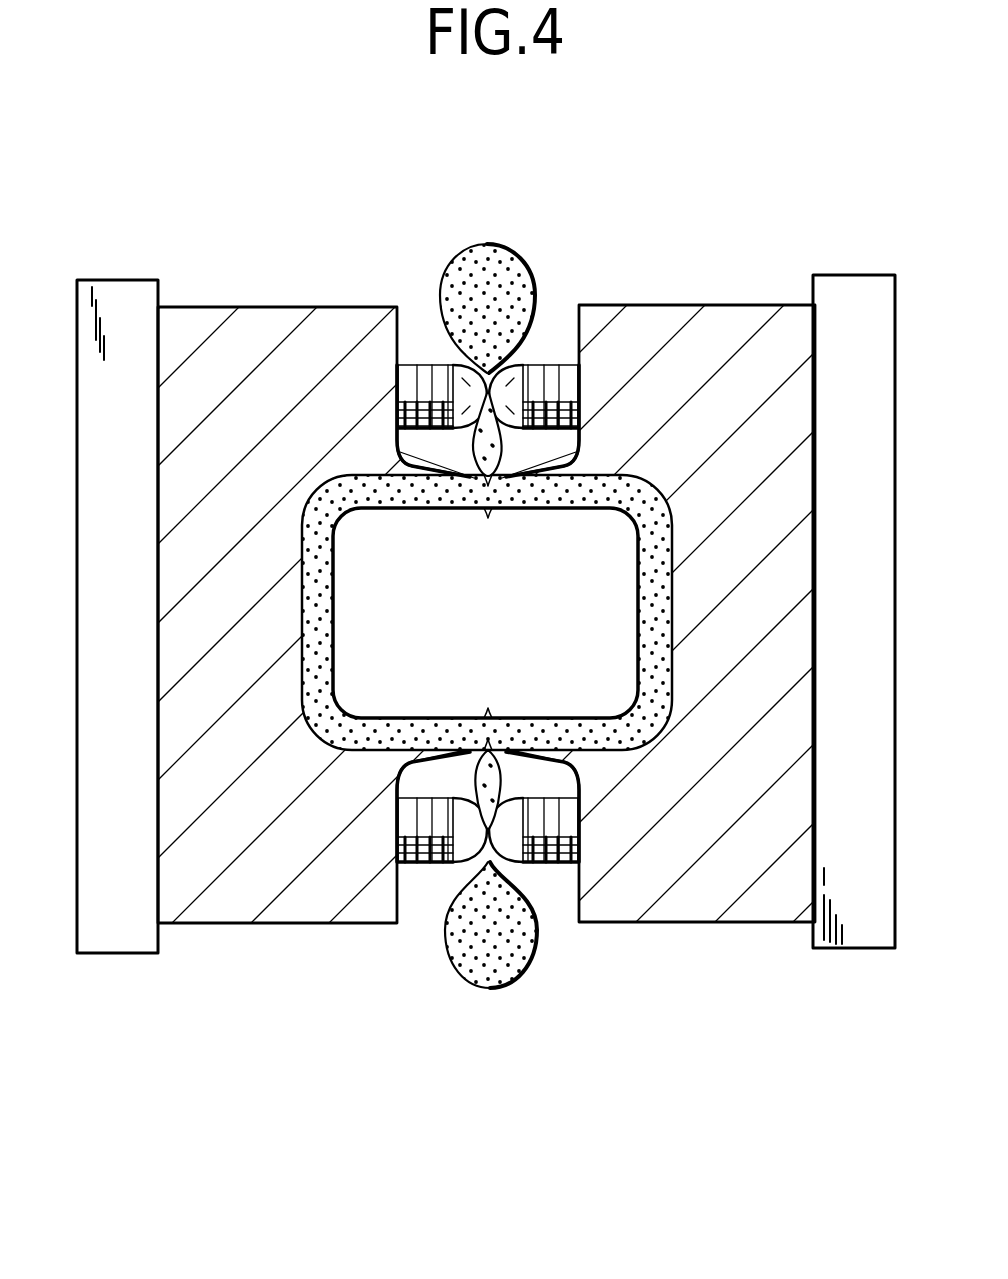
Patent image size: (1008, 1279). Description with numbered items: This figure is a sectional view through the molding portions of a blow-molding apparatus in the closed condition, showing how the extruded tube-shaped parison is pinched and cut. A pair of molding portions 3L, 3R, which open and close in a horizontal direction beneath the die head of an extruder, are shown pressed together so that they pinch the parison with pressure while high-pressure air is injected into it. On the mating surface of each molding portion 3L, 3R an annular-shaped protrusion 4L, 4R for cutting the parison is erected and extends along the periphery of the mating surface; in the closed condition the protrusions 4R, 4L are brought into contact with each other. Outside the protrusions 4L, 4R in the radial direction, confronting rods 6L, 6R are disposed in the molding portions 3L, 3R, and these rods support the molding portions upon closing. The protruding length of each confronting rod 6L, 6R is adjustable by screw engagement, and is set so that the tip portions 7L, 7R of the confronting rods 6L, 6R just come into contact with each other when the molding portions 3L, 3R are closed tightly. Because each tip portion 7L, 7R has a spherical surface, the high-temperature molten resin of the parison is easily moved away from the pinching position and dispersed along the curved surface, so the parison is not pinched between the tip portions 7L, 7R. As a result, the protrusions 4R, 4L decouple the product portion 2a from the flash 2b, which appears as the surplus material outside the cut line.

The product portion 2a is at (343, 730).
The flash 2b is at (480, 977).
The molding portion 3L is at (199, 332).
The molding portion 3R is at (754, 327).
The annular-shaped protrusion 4L is at (393, 458).
The annular-shaped protrusion 4R is at (585, 458).
The confronting rod 6L is at (427, 870).
The confronting rod 6R is at (552, 870).
The tip portion 7L is at (462, 368).
The tip portion 7R is at (515, 368).